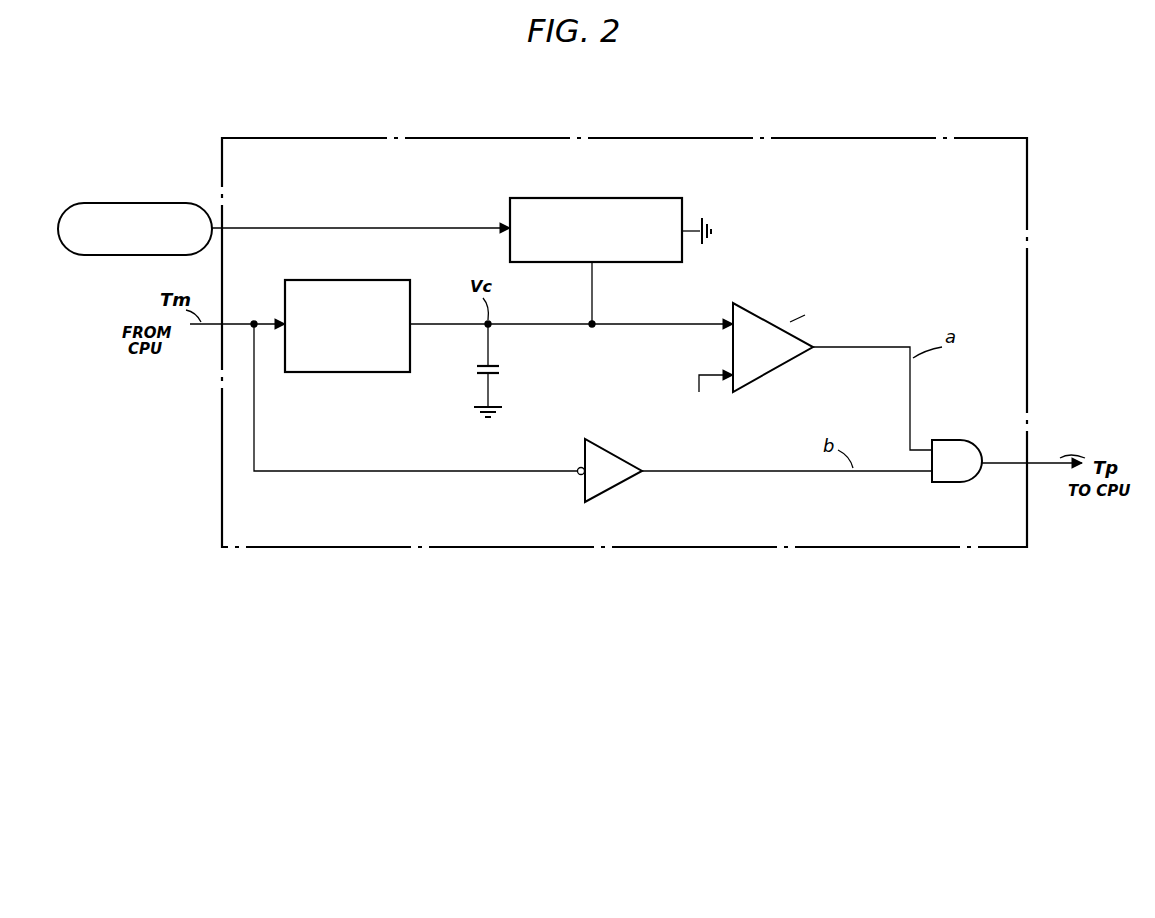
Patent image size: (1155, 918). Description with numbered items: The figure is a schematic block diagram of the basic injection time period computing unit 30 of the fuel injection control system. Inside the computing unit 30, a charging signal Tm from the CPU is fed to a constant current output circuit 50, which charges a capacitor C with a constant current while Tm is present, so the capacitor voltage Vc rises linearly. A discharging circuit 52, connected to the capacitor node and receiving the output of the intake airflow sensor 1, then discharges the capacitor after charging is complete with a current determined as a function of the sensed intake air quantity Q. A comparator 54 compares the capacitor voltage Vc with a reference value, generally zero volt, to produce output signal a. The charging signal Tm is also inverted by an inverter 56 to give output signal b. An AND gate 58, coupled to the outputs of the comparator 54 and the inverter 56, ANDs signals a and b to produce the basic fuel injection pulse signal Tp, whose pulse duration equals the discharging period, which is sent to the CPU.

The intake airflow sensor 1 is at (141, 203).
The basic injection time period computing unit 30 is at (937, 138).
The constant current output circuit 50 is at (363, 280).
The discharging circuit 52 is at (683, 198).
The comparator 54 is at (759, 306).
The inverter 56 is at (622, 455).
The AND gate 58 is at (957, 441).